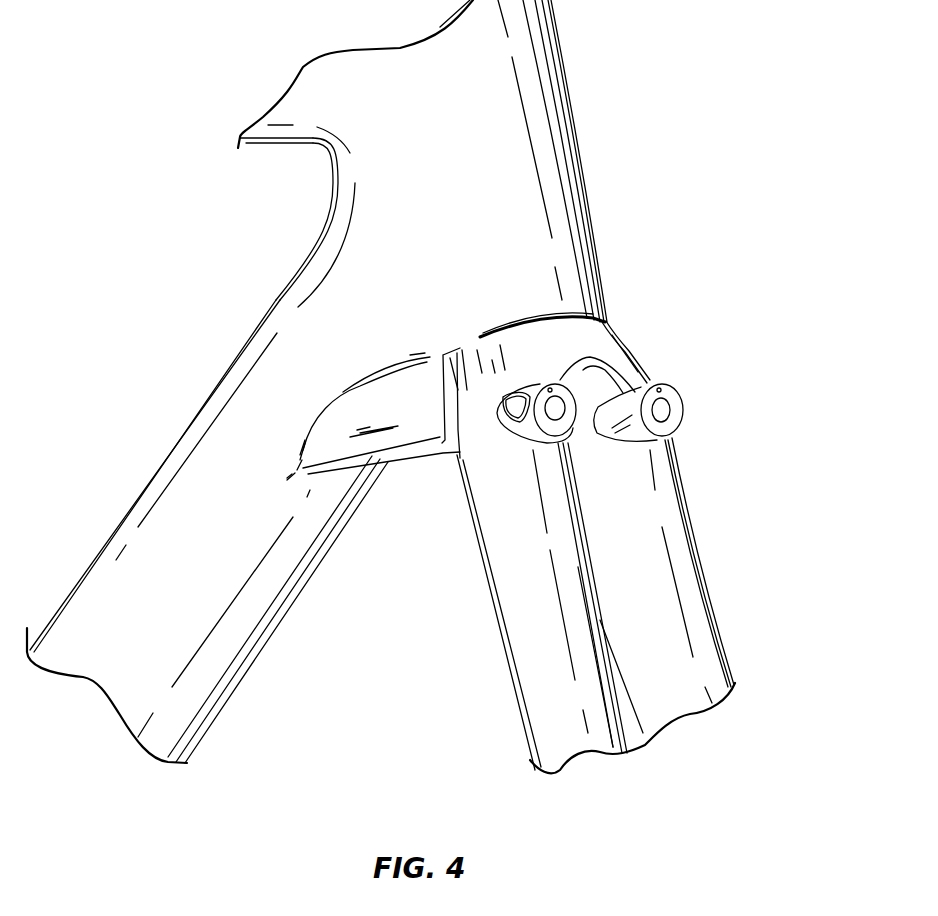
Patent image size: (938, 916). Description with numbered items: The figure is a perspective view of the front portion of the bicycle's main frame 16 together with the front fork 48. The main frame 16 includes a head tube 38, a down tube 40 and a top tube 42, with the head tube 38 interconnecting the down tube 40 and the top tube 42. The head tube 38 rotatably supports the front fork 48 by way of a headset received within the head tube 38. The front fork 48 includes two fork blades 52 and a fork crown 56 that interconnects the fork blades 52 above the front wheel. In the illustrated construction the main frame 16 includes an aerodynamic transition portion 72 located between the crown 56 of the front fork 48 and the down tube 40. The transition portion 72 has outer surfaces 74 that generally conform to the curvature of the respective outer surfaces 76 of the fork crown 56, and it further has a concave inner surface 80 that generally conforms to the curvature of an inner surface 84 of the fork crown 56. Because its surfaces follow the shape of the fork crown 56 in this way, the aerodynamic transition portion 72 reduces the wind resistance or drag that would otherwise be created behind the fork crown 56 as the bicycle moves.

The main frame 16 is at (553, 20).
The head tube 38 is at (583, 173).
The down tube 40 is at (240, 670).
The top tube 42 is at (257, 143).
The front fork 48 is at (687, 512).
The fork blades 52 is at (533, 715).
The fork crown 56 is at (627, 352).
The aerodynamic transition portion 72 is at (380, 404).
The outer surfaces 74 is at (422, 415).
The outer surfaces 76 is at (483, 337).
The concave inner surface 80 is at (447, 453).
The inner surface 84 is at (585, 387).